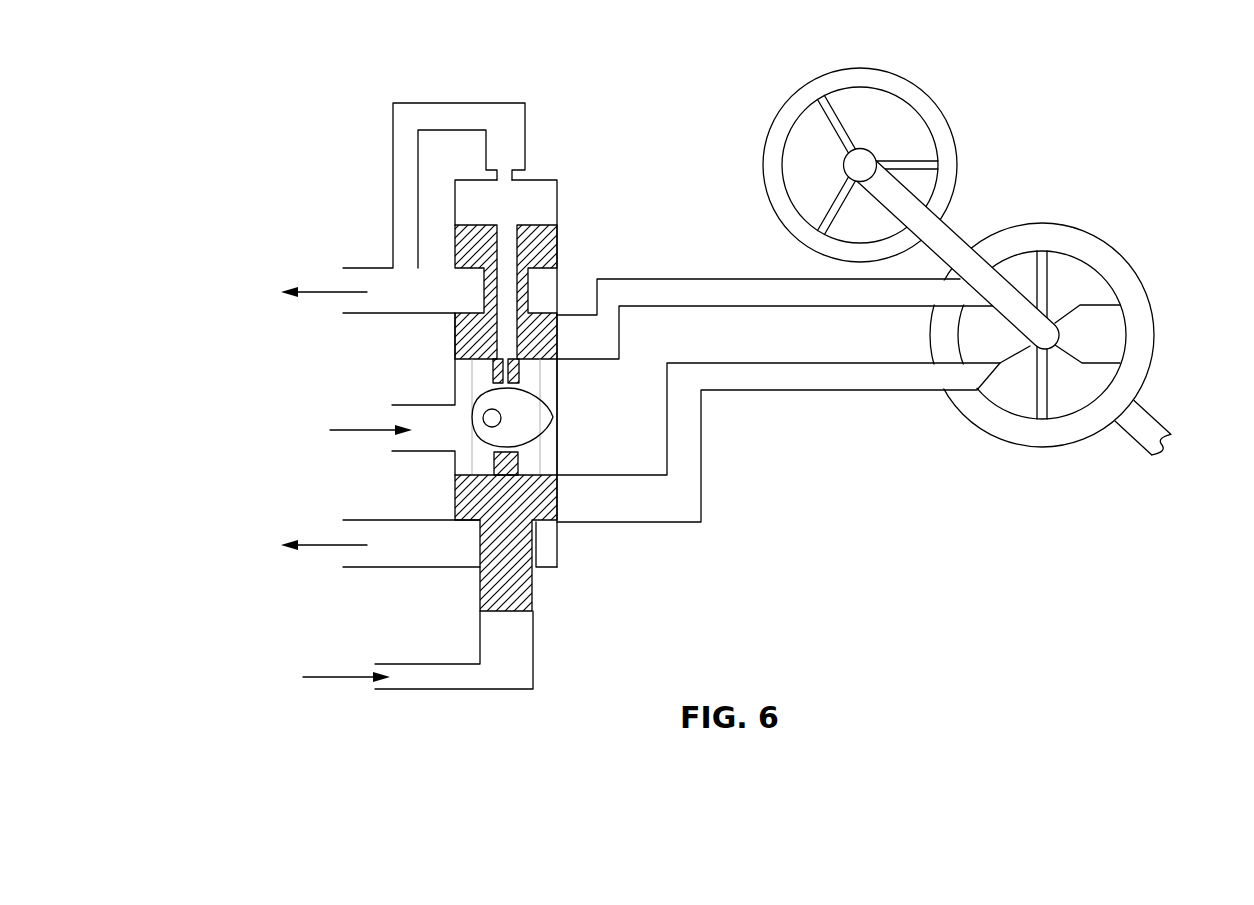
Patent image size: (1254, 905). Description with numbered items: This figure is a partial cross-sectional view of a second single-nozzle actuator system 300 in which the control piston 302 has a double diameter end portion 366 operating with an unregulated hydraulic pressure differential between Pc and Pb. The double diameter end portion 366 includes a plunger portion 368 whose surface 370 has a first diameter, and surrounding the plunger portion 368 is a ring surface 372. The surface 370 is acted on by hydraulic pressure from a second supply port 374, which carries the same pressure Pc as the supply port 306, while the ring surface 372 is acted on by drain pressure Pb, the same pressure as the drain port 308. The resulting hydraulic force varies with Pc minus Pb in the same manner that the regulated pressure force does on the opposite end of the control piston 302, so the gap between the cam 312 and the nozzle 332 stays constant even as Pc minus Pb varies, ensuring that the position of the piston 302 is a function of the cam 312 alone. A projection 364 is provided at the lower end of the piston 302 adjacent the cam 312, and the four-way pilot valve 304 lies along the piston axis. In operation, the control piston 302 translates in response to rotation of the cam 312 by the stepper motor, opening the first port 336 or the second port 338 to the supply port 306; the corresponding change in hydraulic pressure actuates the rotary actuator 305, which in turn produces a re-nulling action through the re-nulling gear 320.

The single-nozzle actuator system 300 is at (232, 80).
The control piston 302 is at (543, 247).
The four-way pilot valve 304 is at (557, 382).
The rotary actuator 305 is at (1148, 300).
The supply port 306 is at (416, 443).
The drain port 308 is at (368, 307).
The cam 312 is at (482, 398).
The re-nulling gear 320 is at (953, 122).
The nozzle 332 is at (493, 378).
The first port 336 is at (568, 333).
The second port 338 is at (568, 503).
The projection 364 is at (518, 458).
The double diameter end portion 366 is at (443, 490).
The plunger portion 368 is at (490, 587).
The surface 370 is at (503, 612).
The ring surface 372 is at (543, 569).
The second supply port 374 is at (411, 684).